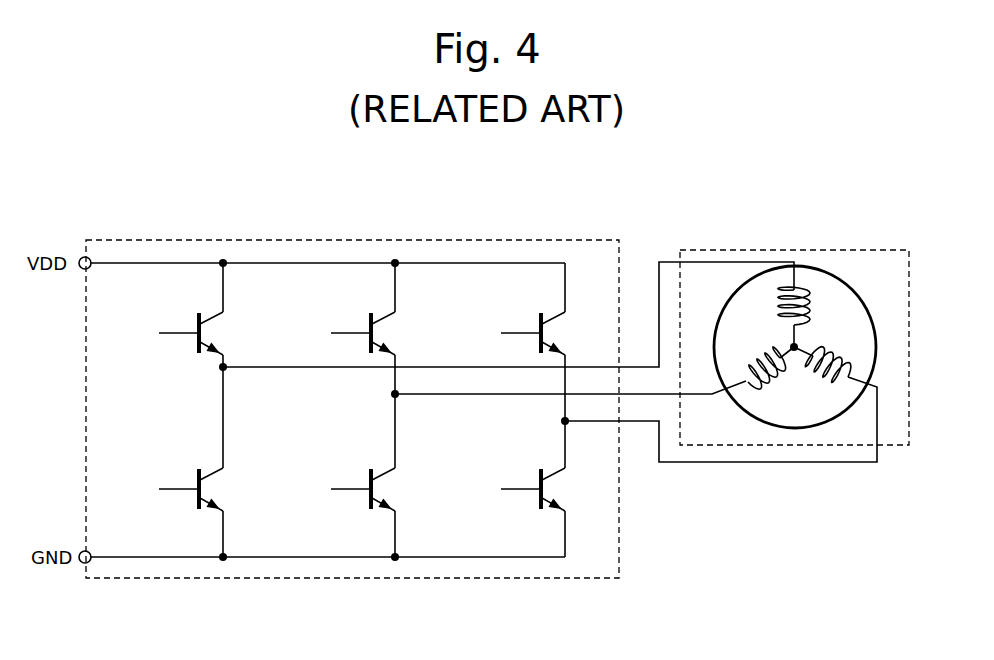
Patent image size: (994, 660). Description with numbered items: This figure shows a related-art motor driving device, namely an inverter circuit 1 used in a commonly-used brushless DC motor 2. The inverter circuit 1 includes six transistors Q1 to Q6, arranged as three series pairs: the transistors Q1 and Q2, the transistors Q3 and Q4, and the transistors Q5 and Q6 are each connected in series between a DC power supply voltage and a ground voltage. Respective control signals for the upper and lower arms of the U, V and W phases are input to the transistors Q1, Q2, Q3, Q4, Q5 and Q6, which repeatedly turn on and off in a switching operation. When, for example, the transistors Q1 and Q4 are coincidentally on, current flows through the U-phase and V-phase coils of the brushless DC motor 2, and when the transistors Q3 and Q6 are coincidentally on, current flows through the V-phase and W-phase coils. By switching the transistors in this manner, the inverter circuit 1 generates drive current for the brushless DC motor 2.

The inverter circuit 1 is at (439, 240).
The brushless DC motor 2 is at (796, 250).
The transistor Q1 is at (205, 315).
The transistor Q2 is at (205, 462).
The transistor Q3 is at (377, 328).
The transistor Q4 is at (377, 475).
The transistor Q5 is at (546, 342).
The transistor Q6 is at (546, 489).